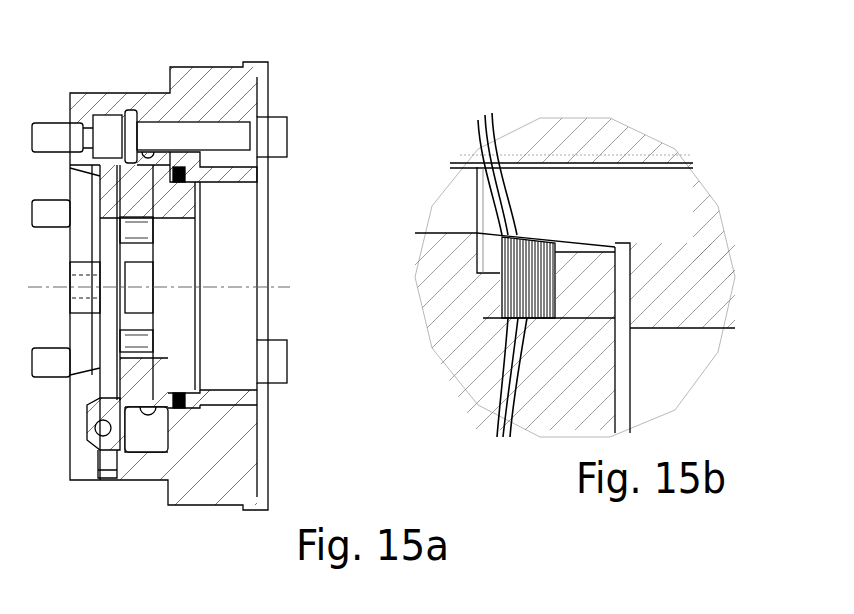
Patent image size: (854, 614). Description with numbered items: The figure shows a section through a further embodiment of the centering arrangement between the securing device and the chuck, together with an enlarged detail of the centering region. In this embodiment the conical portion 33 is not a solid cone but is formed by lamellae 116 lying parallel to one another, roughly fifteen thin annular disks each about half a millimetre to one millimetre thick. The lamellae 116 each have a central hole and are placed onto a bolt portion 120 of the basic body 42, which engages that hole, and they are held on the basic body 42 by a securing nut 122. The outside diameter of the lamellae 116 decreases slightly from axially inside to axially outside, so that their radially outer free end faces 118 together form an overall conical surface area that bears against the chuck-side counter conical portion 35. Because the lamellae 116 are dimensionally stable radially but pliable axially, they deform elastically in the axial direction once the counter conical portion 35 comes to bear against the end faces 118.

In FIG. 15A, the conical portion 33 is at (178, 167).
In FIG. 15B, the conical portion 33 is at (518, 283).
In FIG. 15B, the counter conical portion 35 is at (535, 233).
In FIG. 15B, the basic body 42 is at (468, 383).
In FIG. 15B, the lamellae 116 is at (511, 394).
In FIG. 15B, the radially outer free end faces 118 is at (487, 162).
In FIG. 15A, the bolt portion 120 is at (187, 207).
In FIG. 15B, the bolt portion 120 is at (593, 377).
In FIG. 15A, the securing nut 122 is at (188, 173).
In FIG. 15B, the securing nut 122 is at (600, 278).